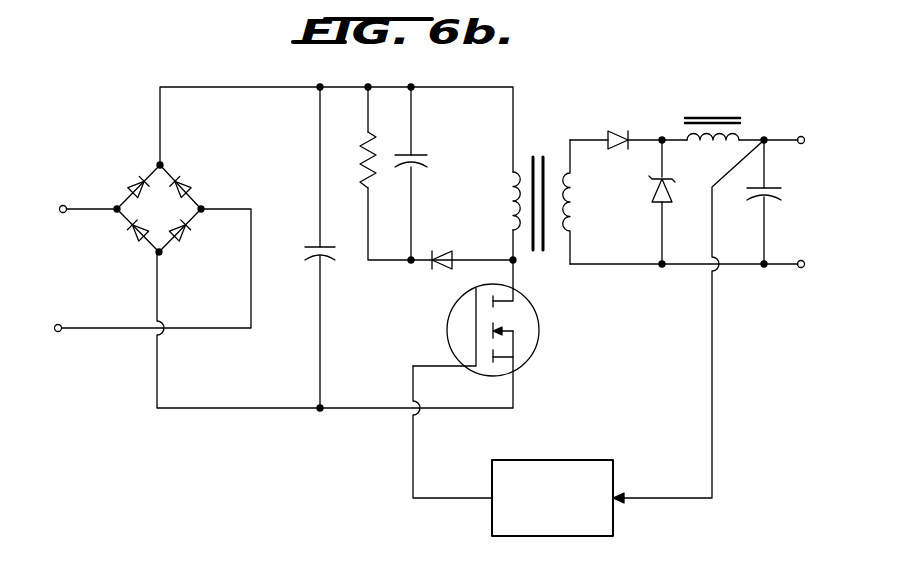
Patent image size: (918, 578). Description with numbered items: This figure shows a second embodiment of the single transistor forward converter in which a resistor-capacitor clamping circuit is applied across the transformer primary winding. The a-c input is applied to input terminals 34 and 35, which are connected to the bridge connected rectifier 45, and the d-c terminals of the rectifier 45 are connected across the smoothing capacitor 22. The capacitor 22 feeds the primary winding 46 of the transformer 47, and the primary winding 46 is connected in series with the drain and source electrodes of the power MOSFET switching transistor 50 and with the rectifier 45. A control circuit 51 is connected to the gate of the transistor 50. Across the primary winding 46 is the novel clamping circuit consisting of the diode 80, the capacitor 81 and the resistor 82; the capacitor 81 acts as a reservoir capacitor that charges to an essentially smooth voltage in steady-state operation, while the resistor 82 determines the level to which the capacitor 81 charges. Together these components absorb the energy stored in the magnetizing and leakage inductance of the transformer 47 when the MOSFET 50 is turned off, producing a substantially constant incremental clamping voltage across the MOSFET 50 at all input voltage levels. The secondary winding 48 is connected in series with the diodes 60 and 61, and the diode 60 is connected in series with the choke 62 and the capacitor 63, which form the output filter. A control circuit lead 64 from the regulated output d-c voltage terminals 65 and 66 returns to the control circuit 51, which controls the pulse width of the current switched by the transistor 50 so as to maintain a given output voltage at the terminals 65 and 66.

The input terminal 34 is at (82, 179).
The input terminal 35 is at (58, 332).
The bridge connected rectifier 45 is at (155, 188).
The smoothing capacitor 22 is at (305, 258).
The resistor 82 is at (356, 158).
The capacitor 81 is at (430, 165).
The diode 80 is at (434, 272).
The primary winding 46 is at (511, 200).
The transformer 47 is at (550, 150).
The secondary winding 48 is at (570, 212).
The power MOSFET switching transistor 50 is at (540, 339).
The control circuit 51 is at (558, 460).
The diode 60 is at (617, 130).
The diode 61 is at (652, 191).
The choke 62 is at (742, 131).
The capacitor 63 is at (780, 198).
The control circuit lead 64 is at (712, 406).
The output d-c voltage terminal 65 is at (812, 126).
The output d-c voltage terminal 66 is at (800, 268).